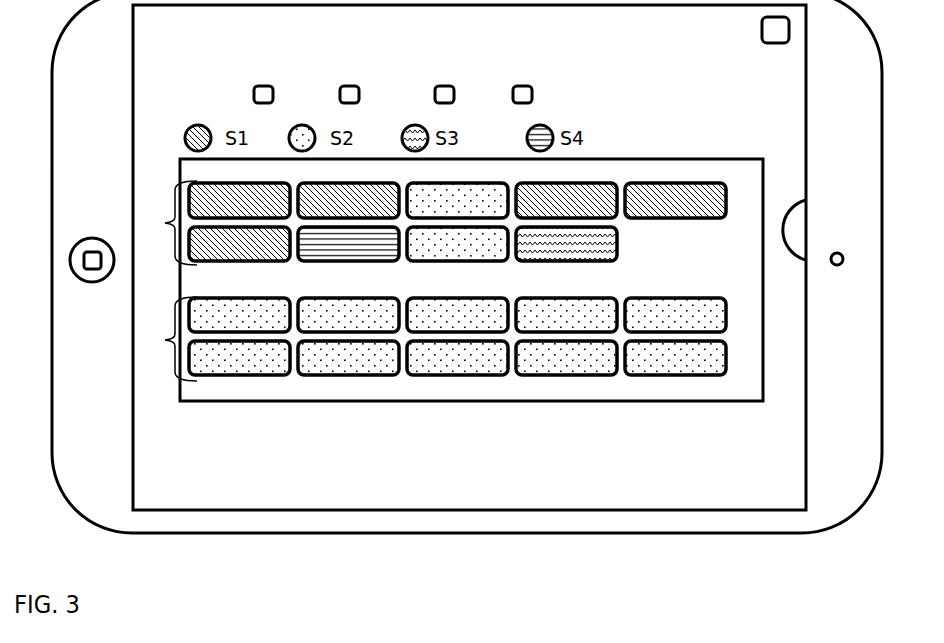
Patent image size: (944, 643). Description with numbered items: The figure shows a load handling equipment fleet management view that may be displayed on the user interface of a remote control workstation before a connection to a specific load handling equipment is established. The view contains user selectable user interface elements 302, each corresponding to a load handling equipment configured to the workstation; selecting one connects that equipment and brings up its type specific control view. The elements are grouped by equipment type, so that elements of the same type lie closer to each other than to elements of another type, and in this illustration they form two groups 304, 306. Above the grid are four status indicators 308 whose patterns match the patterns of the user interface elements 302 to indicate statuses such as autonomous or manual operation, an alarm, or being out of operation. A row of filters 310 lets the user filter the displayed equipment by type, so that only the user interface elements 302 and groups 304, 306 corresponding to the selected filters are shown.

The user selectable user interface element 302 is at (618, 185).
The first group of load handling equipment 304 is at (136, 222).
The second group of load handling equipment 306 is at (134, 348).
The status indicator 308 is at (197, 113).
The filter 310 is at (596, 87).